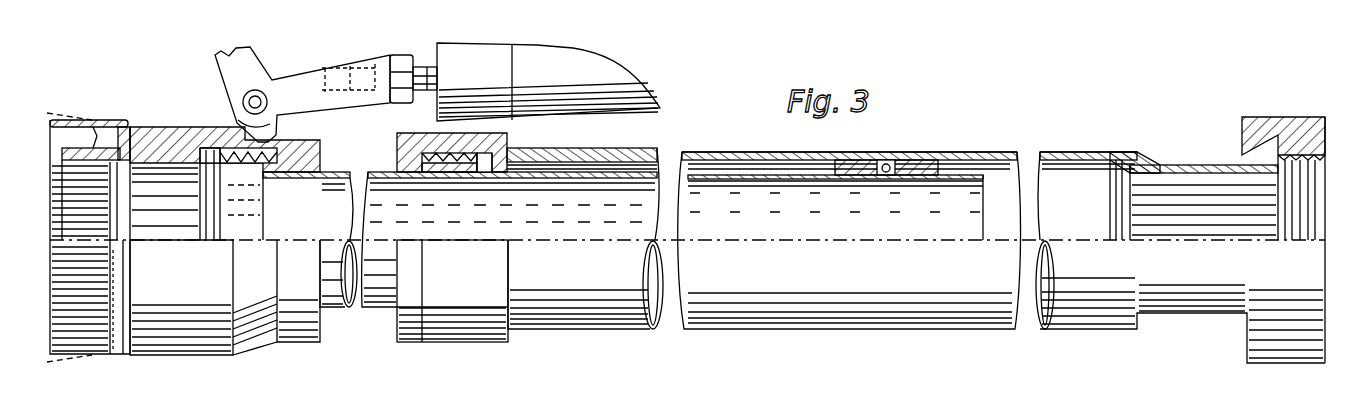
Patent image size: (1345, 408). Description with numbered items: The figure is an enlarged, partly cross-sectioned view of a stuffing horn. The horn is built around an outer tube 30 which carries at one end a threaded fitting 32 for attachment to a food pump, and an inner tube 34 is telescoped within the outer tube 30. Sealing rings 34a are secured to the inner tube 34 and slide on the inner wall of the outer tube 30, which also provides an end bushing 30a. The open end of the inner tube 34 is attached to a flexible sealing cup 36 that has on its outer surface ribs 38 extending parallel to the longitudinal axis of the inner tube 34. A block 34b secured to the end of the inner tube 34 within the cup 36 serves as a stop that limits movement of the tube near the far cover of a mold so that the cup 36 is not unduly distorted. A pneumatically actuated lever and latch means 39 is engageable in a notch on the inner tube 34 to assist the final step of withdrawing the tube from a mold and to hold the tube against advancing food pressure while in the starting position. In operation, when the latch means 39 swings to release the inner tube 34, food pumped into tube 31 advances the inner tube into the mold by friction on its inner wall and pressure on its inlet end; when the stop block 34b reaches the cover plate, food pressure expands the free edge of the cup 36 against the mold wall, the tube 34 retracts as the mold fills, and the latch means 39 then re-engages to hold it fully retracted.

The outer tube 30 is at (898, 152).
The end bushing 30a is at (412, 335).
The tube 31 is at (1187, 173).
The threaded fitting 32 is at (1239, 143).
The inner tube 34 is at (380, 170).
The sealing rings 34a is at (902, 179).
The block 34b is at (87, 148).
The flexible sealing cup 36 is at (110, 356).
The ribs 38 is at (110, 303).
The lever and latch means 39 is at (212, 90).